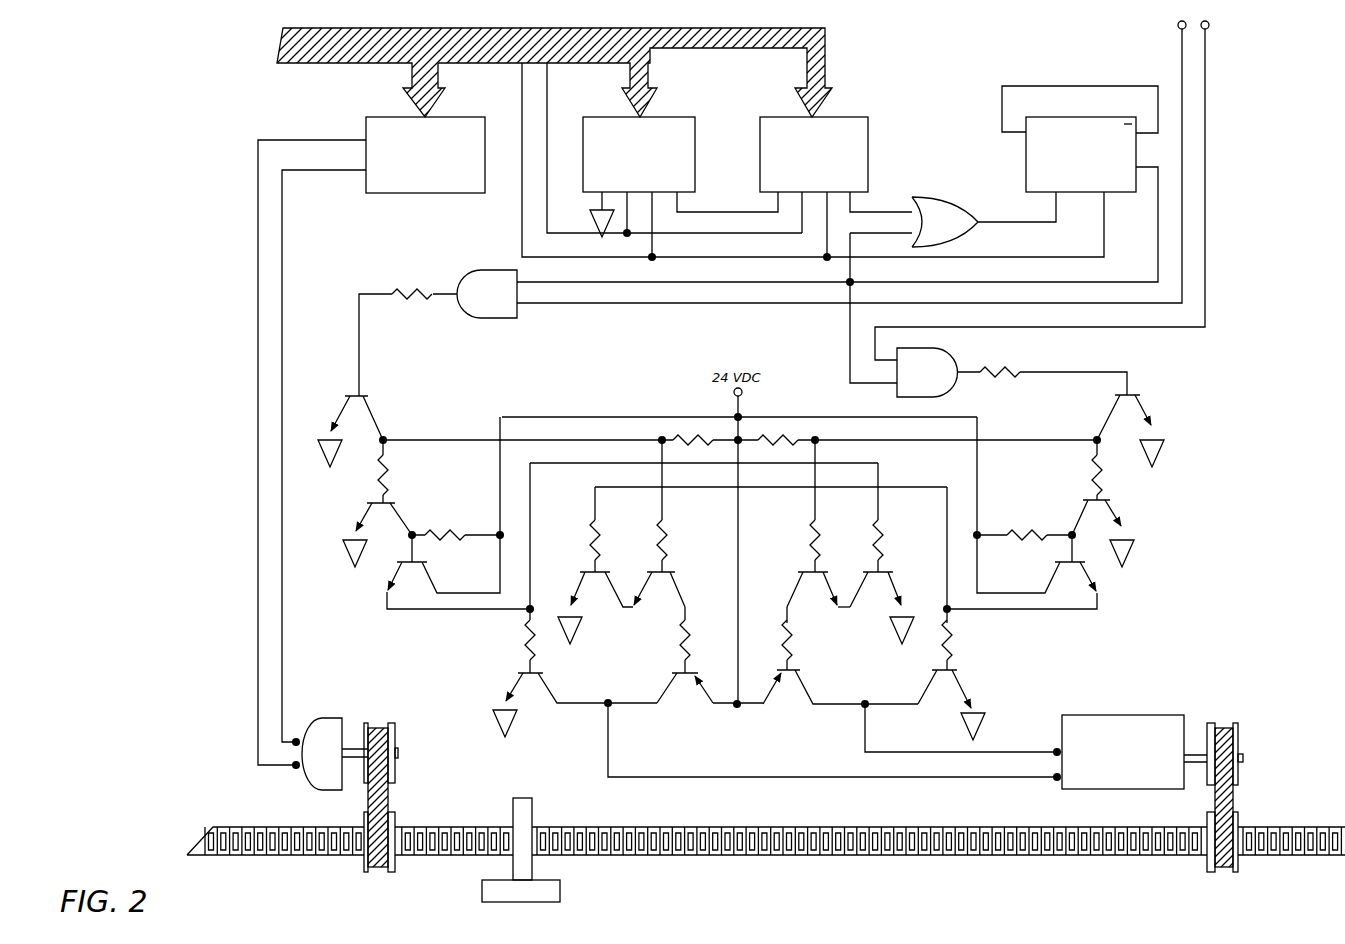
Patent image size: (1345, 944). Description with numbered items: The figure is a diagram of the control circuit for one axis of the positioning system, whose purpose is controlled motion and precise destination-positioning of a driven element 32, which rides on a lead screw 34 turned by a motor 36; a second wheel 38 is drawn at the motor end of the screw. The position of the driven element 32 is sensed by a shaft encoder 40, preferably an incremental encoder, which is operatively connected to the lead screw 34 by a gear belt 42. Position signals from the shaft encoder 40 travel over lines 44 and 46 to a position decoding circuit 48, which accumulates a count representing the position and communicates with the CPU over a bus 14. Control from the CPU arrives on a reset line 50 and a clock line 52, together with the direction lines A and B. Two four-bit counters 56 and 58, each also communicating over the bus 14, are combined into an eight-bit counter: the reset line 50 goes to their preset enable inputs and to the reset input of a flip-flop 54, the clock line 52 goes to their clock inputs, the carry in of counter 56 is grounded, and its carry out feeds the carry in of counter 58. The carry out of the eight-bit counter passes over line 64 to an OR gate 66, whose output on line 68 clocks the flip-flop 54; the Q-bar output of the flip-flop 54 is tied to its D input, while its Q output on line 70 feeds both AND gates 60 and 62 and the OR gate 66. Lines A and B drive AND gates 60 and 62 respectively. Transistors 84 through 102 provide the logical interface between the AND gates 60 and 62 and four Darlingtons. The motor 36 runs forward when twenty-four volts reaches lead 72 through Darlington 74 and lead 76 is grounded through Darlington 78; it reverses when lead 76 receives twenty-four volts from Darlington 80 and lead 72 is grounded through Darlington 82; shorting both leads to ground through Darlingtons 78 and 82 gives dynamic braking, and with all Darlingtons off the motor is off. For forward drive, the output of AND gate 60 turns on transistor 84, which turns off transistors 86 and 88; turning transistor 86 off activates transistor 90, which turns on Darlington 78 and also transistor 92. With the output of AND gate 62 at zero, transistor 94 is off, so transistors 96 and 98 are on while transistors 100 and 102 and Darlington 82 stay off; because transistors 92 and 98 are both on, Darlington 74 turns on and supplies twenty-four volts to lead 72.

The bus 14 is at (278, 45).
The position decoding circuit 48 is at (371, 114).
The reset line 50 is at (522, 104).
The clock line 52 is at (570, 95).
The 4-bit counter 56 is at (680, 116).
The 4-bit counter 58 is at (865, 116).
The flip-flop 54 is at (1024, 154).
The line 64 is at (912, 210).
The OR gate 66 is at (950, 199).
The line 68 is at (1003, 220).
The line 70 is at (1160, 244).
The line 44 is at (292, 452).
The line 46 is at (282, 250).
The AND gate 60 is at (470, 318).
The AND gate 62 is at (944, 349).
The transistor 84 is at (352, 431).
The transistor 86 is at (379, 503).
The transistor 90 is at (458, 513).
The Darlington 78 is at (575, 600).
The Darlington 80 is at (710, 656).
The Darlington 74 is at (825, 657).
The Darlington 82 is at (951, 613).
The transistor 102 is at (595, 565).
The transistor 88 is at (659, 524).
The transistor 98 is at (818, 524).
The transistor 92 is at (882, 553).
The transistor 94 is at (1128, 447).
The transistor 96 is at (1053, 533).
The transistor 100 is at (1022, 513).
The shaft encoder 40 is at (316, 714).
The gear belt 42 is at (395, 806).
The driven element 32 is at (527, 797).
The lead screw 34 is at (853, 856).
The motor 36 is at (1062, 713).
The second drive wheel 38 is at (1238, 800).
The lead 72 is at (892, 752).
The lead 76 is at (688, 777).